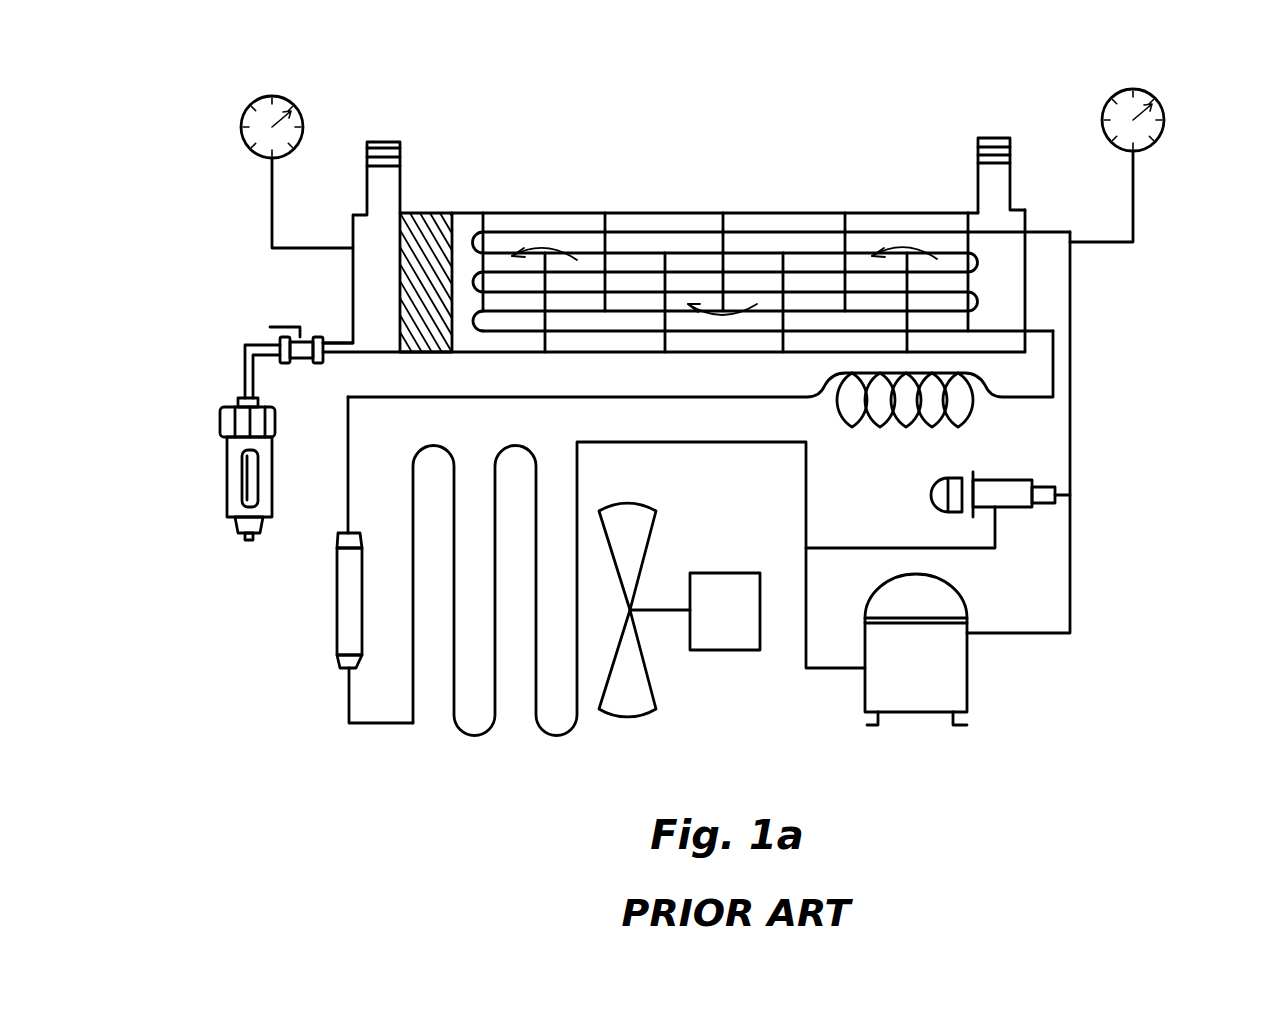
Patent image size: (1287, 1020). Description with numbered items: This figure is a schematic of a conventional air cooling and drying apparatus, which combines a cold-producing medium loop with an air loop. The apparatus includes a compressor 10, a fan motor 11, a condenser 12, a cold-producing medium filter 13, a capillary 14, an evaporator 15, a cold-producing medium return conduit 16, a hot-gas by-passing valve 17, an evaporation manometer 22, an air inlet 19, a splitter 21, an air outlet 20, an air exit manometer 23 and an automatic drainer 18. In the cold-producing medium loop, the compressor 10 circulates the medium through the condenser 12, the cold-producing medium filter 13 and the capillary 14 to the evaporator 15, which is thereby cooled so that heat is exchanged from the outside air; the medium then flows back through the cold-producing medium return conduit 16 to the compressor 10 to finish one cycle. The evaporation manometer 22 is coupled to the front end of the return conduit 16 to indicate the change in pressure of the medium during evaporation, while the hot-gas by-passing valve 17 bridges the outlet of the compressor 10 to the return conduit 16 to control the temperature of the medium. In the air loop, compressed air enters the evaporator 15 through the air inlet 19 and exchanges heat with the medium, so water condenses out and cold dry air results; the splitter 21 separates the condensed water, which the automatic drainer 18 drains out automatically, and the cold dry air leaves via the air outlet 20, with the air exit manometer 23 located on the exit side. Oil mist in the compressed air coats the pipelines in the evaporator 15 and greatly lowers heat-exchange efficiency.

The compressor 10 is at (923, 715).
The fan motor 11 is at (727, 655).
The condenser 12 is at (485, 742).
The cold-producing medium filter 13 is at (333, 584).
The capillary 14 is at (930, 362).
The evaporator 15 is at (757, 213).
The cold-producing medium return conduit 16 is at (1073, 425).
The hot-gas by-passing valve 17 is at (997, 480).
The automatic drainer 18 is at (213, 420).
The air inlet 19 is at (995, 138).
The air outlet 20 is at (388, 142).
The splitter 21 is at (448, 213).
The evaporation manometer 22 is at (1165, 112).
The air exit manometer 23 is at (243, 127).